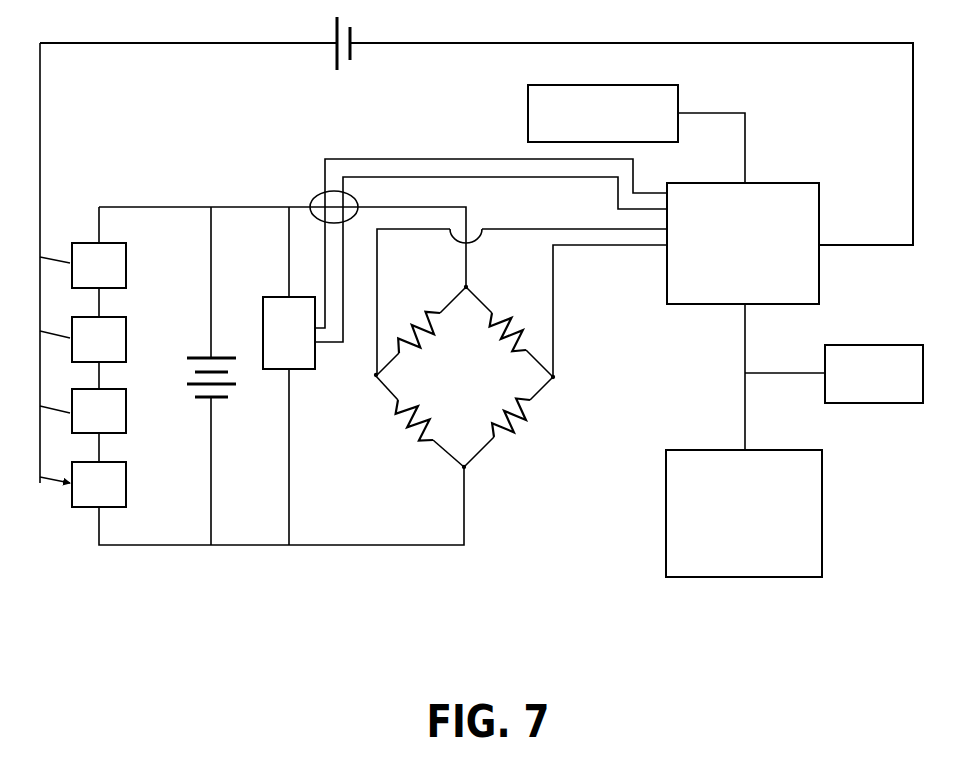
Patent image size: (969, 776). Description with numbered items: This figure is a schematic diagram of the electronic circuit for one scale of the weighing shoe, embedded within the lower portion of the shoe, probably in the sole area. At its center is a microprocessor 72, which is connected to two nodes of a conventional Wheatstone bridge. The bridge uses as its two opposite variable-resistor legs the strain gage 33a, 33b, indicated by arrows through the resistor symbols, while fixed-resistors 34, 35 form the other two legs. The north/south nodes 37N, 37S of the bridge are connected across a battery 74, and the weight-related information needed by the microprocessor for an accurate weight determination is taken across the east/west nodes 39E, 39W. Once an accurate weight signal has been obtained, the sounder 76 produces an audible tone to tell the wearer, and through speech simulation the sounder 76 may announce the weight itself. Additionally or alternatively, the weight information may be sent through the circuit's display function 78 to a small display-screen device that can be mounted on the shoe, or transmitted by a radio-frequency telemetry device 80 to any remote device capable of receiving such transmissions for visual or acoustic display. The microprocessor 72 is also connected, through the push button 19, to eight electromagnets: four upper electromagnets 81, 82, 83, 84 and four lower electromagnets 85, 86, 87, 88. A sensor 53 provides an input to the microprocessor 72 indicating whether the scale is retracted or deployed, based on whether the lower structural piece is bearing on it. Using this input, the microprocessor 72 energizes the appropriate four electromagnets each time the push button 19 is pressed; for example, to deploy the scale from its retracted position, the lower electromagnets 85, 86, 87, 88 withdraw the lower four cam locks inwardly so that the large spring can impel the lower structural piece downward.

The push button 19 is at (335, 56).
The sensor 53 is at (528, 105).
The microprocessor 72 is at (819, 230).
The sounder 76 is at (868, 345).
The display function 78 is at (822, 527).
The radio-frequency telemetry device 80 is at (285, 297).
The battery 74 is at (233, 386).
The upper electromagnet 81 is at (134, 255).
The upper electromagnet 82 is at (126, 278).
The upper electromagnet 83 is at (134, 330).
The upper electromagnet 84 is at (126, 352).
The lower electromagnet 85 is at (134, 425).
The lower electromagnet 86 is at (126, 405).
The lower electromagnet 87 is at (134, 500).
The lower electromagnet 88 is at (126, 478).
The fixed resistor 34 is at (425, 316).
The strain gage 33a is at (400, 413).
The strain gage 33b is at (530, 337).
The fixed resistor 35 is at (525, 428).
The north node 37N is at (468, 288).
The south node 37S is at (466, 468).
The west node 39W is at (373, 377).
The east node 39E is at (555, 377).